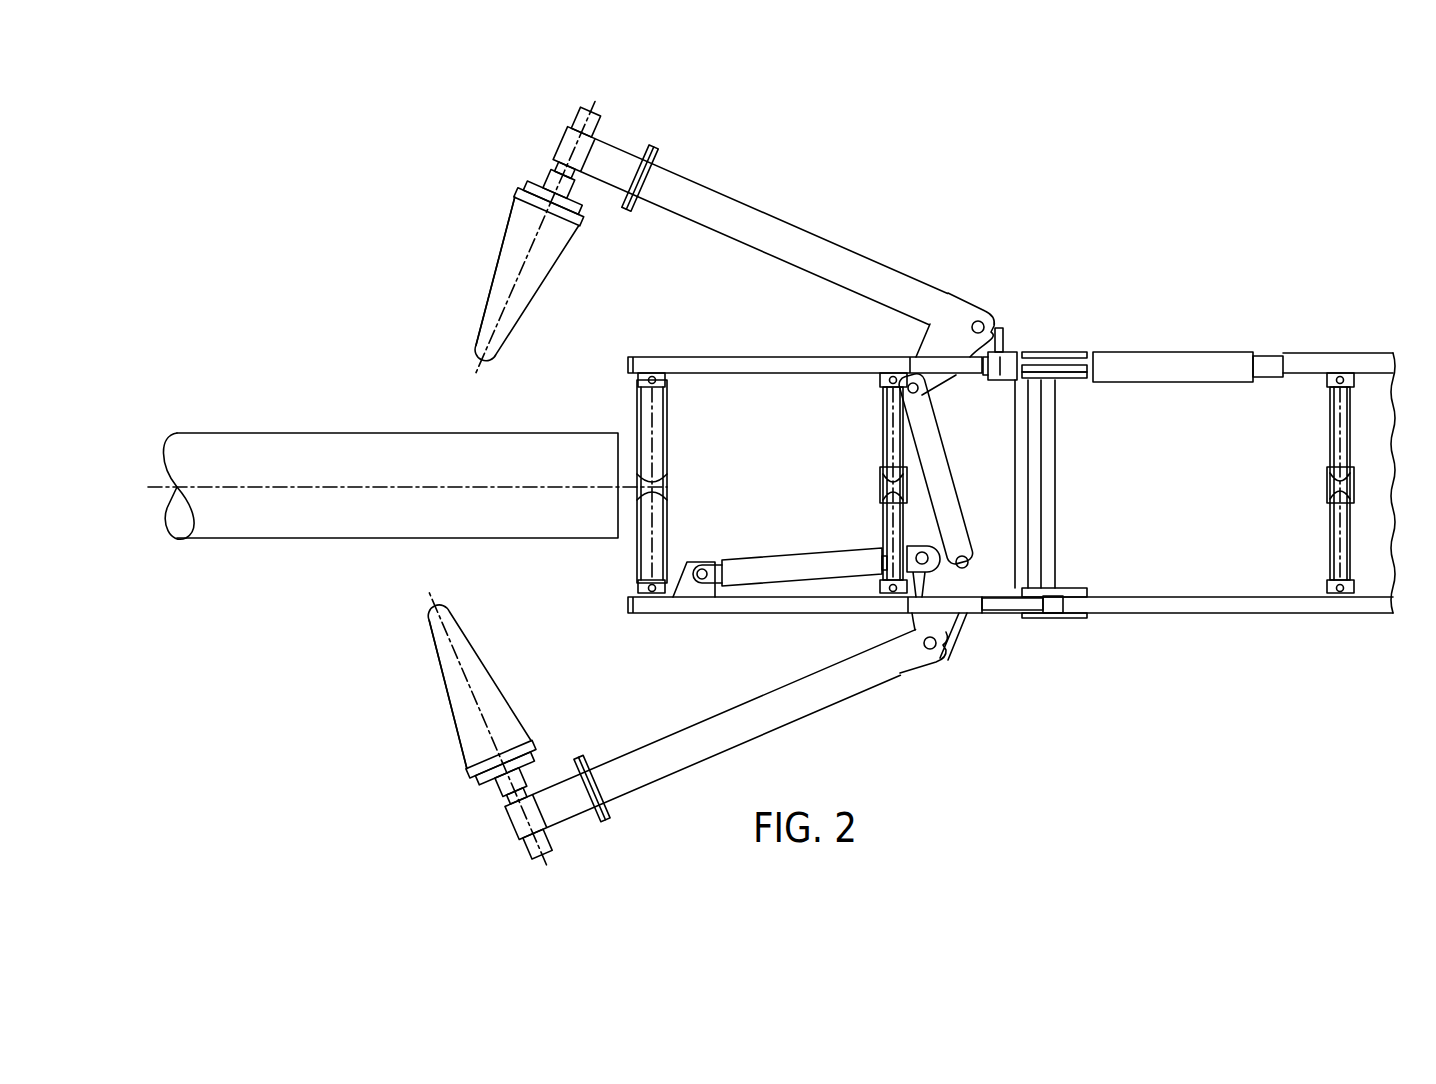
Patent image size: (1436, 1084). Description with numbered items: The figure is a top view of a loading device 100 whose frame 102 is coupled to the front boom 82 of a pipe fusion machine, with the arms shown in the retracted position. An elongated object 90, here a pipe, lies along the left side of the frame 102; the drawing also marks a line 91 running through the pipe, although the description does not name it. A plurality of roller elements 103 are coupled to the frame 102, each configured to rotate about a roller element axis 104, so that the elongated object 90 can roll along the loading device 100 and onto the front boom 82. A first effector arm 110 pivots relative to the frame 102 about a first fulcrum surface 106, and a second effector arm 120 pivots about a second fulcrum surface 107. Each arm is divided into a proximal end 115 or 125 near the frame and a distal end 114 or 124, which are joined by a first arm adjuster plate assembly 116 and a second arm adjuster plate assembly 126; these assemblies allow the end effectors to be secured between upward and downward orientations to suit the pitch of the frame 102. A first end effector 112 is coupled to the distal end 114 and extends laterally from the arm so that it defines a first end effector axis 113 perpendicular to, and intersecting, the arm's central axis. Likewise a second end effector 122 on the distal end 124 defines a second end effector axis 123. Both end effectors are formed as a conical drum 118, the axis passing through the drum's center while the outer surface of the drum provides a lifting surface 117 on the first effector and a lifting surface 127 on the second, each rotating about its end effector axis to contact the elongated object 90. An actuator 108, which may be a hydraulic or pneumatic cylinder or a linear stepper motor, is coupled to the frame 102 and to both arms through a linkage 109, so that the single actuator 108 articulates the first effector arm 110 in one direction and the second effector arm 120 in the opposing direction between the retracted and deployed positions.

The front boom 82 is at (1237, 622).
The elongated object 90 is at (287, 539).
The pipe axis 91 is at (397, 489).
The loading device 100 is at (1070, 232).
The frame 102 is at (735, 614).
The roller elements 103 is at (668, 442).
The roller element axis 104 is at (663, 420).
The first fulcrum surface 106 is at (941, 648).
The second fulcrum surface 107 is at (993, 318).
The actuator 108 is at (787, 556).
The linkage 109 is at (945, 455).
The first effector arm 110 is at (690, 728).
The first end effector 112 is at (460, 727).
The first end effector axis 113 is at (430, 600).
The distal end of the first effector arm 114 is at (563, 820).
The proximal end of the first effector arm 115 is at (879, 685).
The first arm adjuster plate assembly 116 is at (611, 818).
The lifting surface 117 is at (490, 675).
The conical drum 118 is at (505, 251).
The second effector arm 120 is at (737, 239).
The second end effector 122 is at (534, 239).
The second end effector axis 123 is at (472, 374).
The distal end of the second effector arm 124 is at (600, 149).
The proximal end of the second effector arm 125 is at (878, 266).
The second arm adjuster plate assembly 126 is at (657, 150).
The lifting surface 127 is at (560, 255).